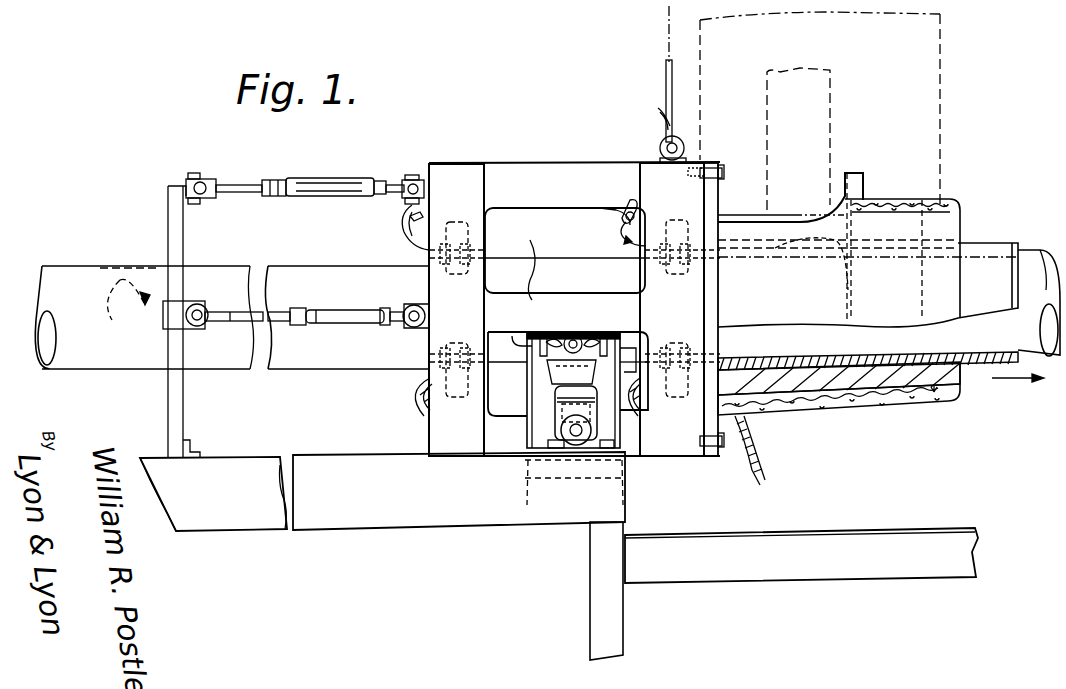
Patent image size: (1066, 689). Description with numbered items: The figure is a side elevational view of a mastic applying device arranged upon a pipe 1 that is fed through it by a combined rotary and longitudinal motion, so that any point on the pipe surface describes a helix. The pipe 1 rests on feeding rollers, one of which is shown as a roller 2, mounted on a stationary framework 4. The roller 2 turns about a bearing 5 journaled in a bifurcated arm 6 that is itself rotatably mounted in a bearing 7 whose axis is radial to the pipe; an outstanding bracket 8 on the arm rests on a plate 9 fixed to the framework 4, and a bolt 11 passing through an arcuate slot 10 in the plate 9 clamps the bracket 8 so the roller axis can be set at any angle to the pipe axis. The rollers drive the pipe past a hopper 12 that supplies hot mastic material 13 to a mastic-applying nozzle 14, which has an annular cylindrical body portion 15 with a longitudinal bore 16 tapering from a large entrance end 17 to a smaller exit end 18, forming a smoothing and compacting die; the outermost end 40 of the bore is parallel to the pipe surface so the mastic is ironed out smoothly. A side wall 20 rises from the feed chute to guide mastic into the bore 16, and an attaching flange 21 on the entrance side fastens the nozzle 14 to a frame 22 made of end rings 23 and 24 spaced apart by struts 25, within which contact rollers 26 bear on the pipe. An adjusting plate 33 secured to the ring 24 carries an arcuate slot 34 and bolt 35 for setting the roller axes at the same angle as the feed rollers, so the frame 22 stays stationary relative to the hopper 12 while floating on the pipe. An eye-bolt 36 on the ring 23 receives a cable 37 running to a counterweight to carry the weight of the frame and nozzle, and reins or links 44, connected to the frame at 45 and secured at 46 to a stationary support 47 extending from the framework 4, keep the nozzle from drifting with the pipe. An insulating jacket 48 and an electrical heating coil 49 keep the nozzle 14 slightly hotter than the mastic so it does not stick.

The pipe 1 is at (1030, 270).
The feeding roller 2 is at (566, 333).
The stationary framework 4 is at (442, 522).
The bearing 5 is at (626, 362).
The bifurcated arm 6 is at (558, 390).
The bearing 7 is at (584, 414).
The bracket 8 is at (552, 364).
The plate 9 is at (512, 336).
The arcuate slot 10 is at (598, 338).
The bolt 11 is at (582, 336).
The hopper 12 is at (930, 124).
The mastic material 13 is at (828, 397).
The mastic-applying nozzle 14 is at (938, 400).
The annular cylindrical body portion 15 is at (882, 402).
The longitudinal bore 16 is at (812, 368).
The entrance end 17 is at (722, 338).
The exit end 18 is at (962, 376).
The side wall 20 is at (796, 215).
The attaching flange 21 is at (714, 200).
The frame 22 is at (576, 163).
The end ring 23 is at (668, 178).
The end ring 24 is at (456, 180).
The struts 25 is at (540, 200).
The contact rollers 26 is at (455, 290).
The adjusting plate 33 is at (626, 232).
The arcuate slot 34 is at (633, 203).
The bolt 35 is at (614, 210).
The eye-bolt 36 is at (662, 142).
The cable 37 is at (668, 72).
The outermost end of the bore 40 is at (935, 356).
The reins or links 44 is at (247, 192).
The connection to frame 45 is at (410, 176).
The connection to stationary support 46 is at (201, 202).
The stationary support 47 is at (175, 400).
The insulating jacket 48 is at (950, 212).
The electrical heating coil 49 is at (922, 203).